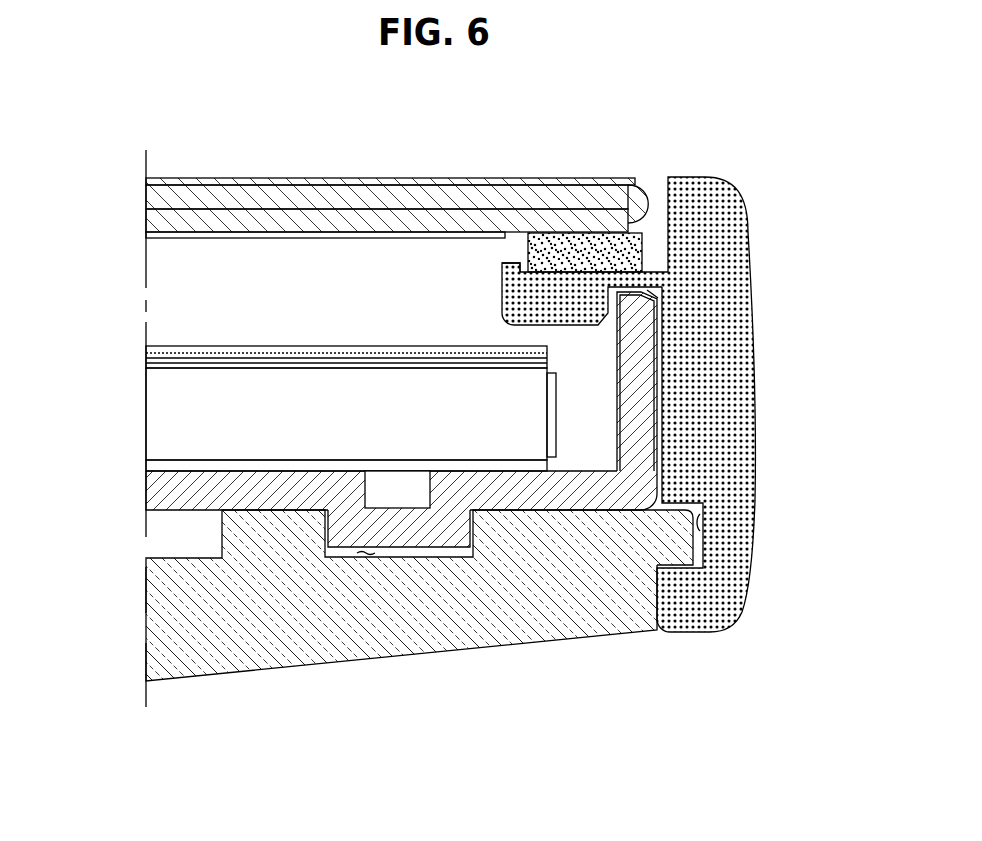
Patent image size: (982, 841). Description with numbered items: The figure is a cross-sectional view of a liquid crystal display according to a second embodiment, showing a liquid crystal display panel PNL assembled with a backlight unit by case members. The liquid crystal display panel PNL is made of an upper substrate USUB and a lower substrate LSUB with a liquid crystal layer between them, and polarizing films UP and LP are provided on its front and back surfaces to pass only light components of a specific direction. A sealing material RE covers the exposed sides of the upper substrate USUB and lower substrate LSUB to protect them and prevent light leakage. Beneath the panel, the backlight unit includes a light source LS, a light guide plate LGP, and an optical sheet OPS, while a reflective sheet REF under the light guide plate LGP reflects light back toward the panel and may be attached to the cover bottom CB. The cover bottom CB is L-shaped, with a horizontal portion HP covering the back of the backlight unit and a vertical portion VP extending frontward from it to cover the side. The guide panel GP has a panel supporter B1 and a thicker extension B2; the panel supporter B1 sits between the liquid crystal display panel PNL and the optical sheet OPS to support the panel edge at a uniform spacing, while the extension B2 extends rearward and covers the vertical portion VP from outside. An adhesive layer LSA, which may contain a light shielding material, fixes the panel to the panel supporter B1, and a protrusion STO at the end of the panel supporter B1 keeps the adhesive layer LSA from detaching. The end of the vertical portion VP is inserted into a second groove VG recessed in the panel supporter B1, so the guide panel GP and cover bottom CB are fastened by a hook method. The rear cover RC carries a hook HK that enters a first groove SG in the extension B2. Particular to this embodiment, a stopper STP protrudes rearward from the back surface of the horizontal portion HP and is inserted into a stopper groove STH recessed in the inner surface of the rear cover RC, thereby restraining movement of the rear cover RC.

The liquid crystal display panel PNL is at (325, 209).
The polarizing film UP is at (147, 181).
The upper substrate USUB is at (147, 197).
The lower substrate LSUB is at (147, 221).
The polarizing film LP is at (298, 241).
The sealing material RE is at (640, 200).
The optical sheet OPS is at (137, 345).
The light guide plate LGP is at (155, 422).
The reflective sheet REF is at (152, 465).
The light source LS is at (549, 402).
The cover bottom CB is at (501, 501).
The vertical portion VP is at (638, 395).
The horizontal portion HP is at (480, 576).
The stopper STP is at (432, 530).
The stopper groove STH is at (370, 557).
The rear cover RC is at (450, 595).
The hook HK is at (680, 553).
The first groove SG is at (702, 523).
The guide panel GP is at (672, 376).
The panel supporter B1 is at (583, 310).
The extension B2 is at (732, 358).
The protrusion STO is at (510, 262).
The second groove VG is at (657, 293).
The adhesive layer LSA is at (580, 240).